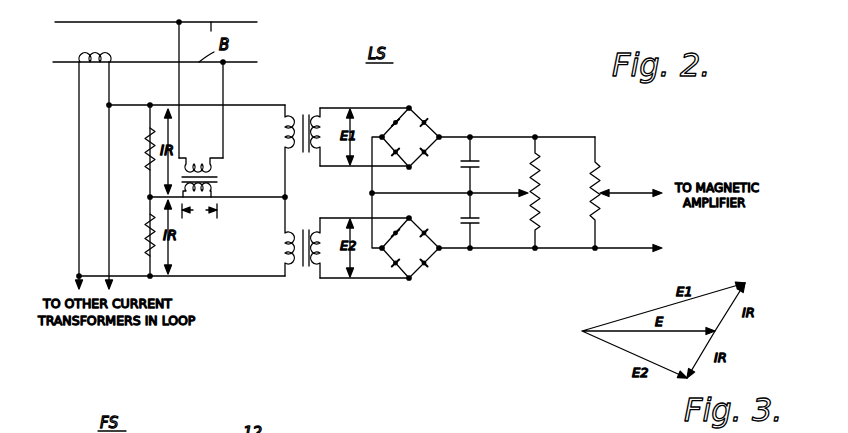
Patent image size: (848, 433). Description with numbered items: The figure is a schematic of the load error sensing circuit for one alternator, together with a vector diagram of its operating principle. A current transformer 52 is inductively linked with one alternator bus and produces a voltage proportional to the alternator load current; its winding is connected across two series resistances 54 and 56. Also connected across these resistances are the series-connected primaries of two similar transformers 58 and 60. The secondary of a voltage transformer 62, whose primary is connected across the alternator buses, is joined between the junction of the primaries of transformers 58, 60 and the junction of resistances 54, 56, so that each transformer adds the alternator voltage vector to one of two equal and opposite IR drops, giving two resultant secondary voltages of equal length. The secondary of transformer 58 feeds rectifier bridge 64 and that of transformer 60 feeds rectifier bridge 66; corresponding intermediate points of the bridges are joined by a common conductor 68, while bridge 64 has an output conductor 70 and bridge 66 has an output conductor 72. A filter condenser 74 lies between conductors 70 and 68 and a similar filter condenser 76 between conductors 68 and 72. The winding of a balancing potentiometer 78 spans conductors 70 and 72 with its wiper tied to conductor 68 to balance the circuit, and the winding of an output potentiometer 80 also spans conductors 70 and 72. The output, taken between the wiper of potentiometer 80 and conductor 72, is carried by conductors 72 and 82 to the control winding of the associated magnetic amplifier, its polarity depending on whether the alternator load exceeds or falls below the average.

The current transformer 52 is at (93, 58).
The resistance 54 is at (147, 150).
The resistance 56 is at (146, 229).
The transformer 58 is at (305, 112).
The transformer 60 is at (308, 271).
The voltage transformer 62 is at (218, 181).
The rectifier bridge 64 is at (416, 112).
The rectifier bridge 66 is at (419, 272).
The common conductor 68 is at (370, 182).
The output conductor 70 is at (455, 137).
The output conductor 72 is at (458, 250).
The filter condenser 74 is at (480, 162).
The filter condenser 76 is at (480, 224).
The balancing potentiometer 78 is at (542, 198).
The output potentiometer 80 is at (601, 185).
The conductor 82 is at (626, 194).